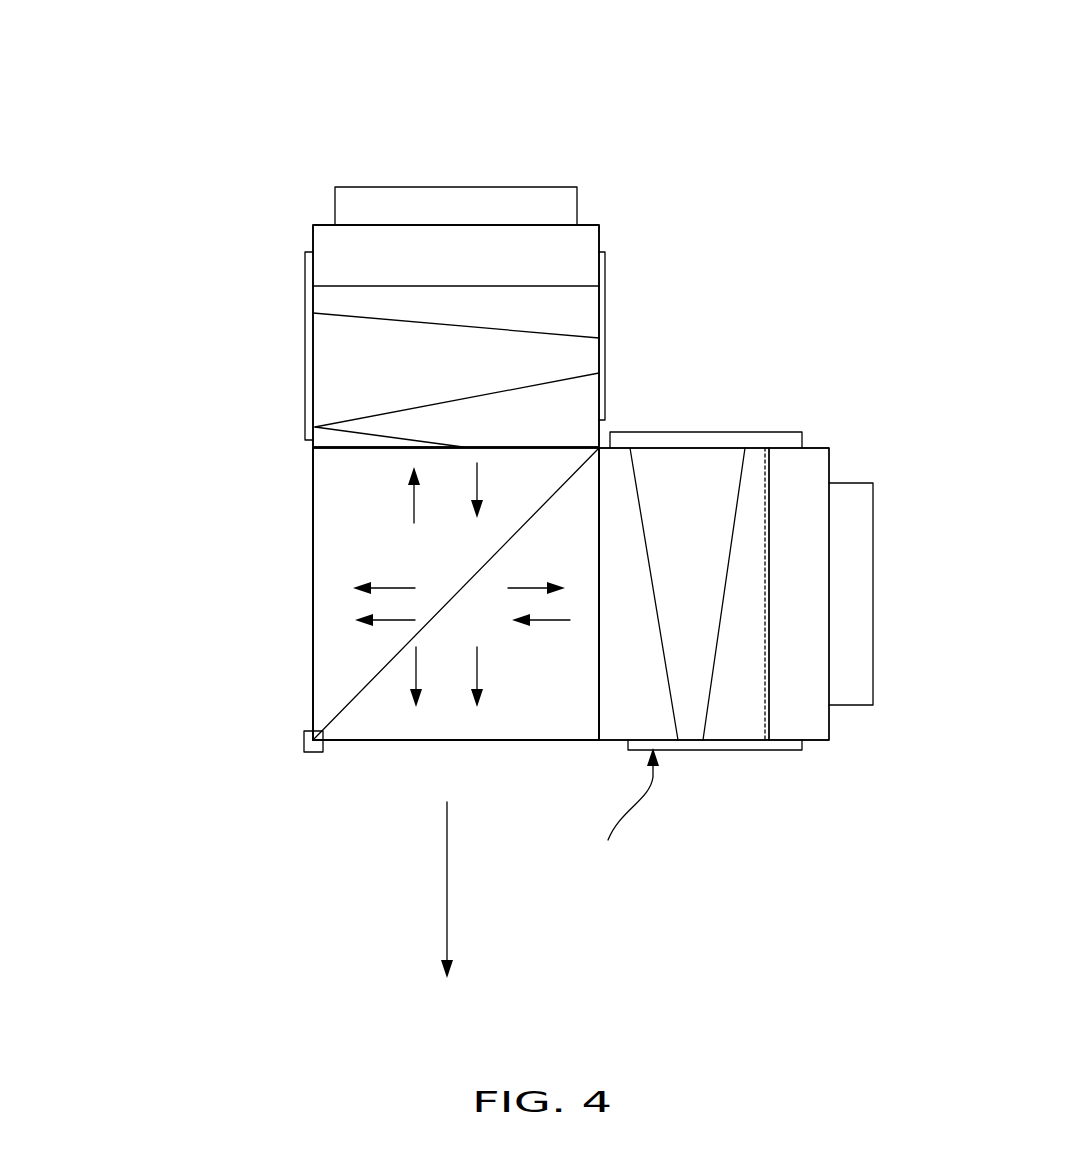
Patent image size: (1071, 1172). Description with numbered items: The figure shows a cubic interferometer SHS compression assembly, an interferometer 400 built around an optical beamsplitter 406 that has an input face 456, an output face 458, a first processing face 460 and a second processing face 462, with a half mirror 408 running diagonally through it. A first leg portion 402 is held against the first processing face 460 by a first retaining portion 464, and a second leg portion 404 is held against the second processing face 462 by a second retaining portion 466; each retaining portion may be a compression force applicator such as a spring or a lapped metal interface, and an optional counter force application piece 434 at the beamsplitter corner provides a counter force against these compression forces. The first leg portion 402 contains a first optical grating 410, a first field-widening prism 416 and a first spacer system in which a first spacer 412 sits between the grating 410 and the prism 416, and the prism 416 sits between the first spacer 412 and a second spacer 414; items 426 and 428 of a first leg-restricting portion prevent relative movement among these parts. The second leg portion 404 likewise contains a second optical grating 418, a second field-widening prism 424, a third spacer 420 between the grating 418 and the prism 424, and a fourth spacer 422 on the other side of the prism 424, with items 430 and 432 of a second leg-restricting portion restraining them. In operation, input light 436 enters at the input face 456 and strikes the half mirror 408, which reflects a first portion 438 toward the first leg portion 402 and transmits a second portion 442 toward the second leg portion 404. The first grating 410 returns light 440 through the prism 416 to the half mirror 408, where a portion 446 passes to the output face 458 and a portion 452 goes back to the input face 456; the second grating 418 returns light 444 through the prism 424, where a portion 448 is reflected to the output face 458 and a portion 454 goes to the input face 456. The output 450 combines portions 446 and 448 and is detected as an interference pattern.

The interferometer 400 is at (118, 154).
The first leg portion 402 is at (656, 109).
The second leg portion 404 is at (922, 703).
The optical beamsplitter 406 is at (329, 523).
The half mirror 408 is at (478, 570).
The first optical grating 410 is at (345, 240).
The first spacer 412 is at (570, 307).
The second spacer 414 is at (570, 400).
The first field-widening prism 416 is at (329, 366).
The second optical grating 418 is at (810, 465).
The third spacer 420 is at (757, 742).
The fourth spacer 422 is at (610, 742).
The second field-widening prism 424 is at (698, 742).
The first leg-restricting portion item 426 is at (311, 289).
The first leg-restricting portion item 428 is at (605, 263).
The second leg-restricting portion item 430 is at (692, 430).
The second leg-restricting portion item 432 is at (625, 813).
The counter force application piece 434 is at (304, 742).
The input light 436 is at (142, 592).
The first portion of input light 438 is at (413, 507).
The light reflected by first grating 440 is at (477, 488).
The second portion of input light 442 is at (535, 587).
The light reflected by second grating 444 is at (553, 623).
The light portion 446 is at (420, 670).
The light portion 448 is at (477, 678).
The output light 450 is at (447, 893).
The light portion 452 is at (393, 622).
The light portion 454 is at (400, 588).
The input face 456 is at (311, 614).
The output face 458 is at (383, 742).
The first processing face 460 is at (325, 428).
The second processing face 462 is at (599, 660).
The first retaining portion 464 is at (385, 187).
The second retaining portion 466 is at (852, 617).